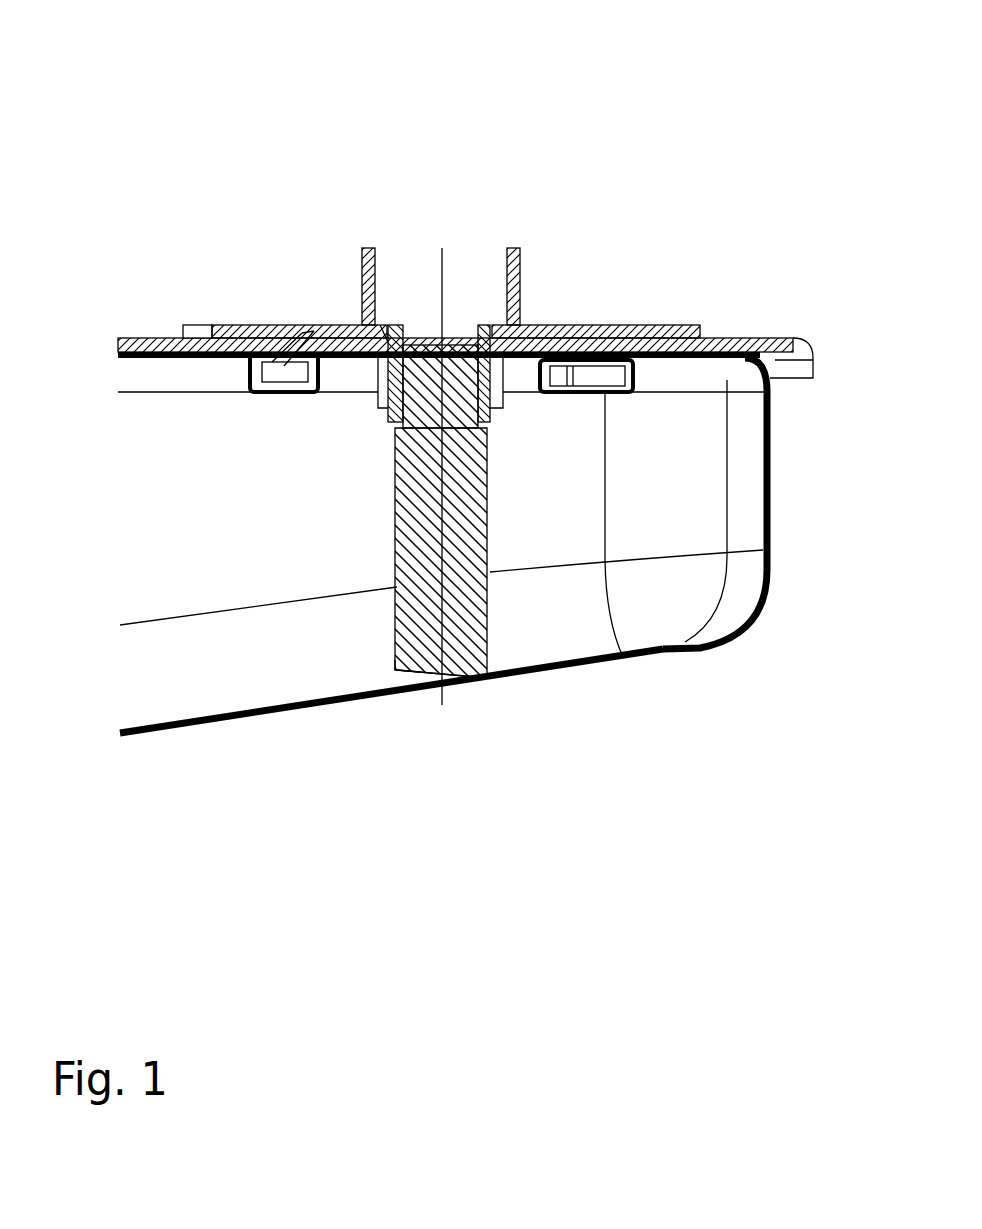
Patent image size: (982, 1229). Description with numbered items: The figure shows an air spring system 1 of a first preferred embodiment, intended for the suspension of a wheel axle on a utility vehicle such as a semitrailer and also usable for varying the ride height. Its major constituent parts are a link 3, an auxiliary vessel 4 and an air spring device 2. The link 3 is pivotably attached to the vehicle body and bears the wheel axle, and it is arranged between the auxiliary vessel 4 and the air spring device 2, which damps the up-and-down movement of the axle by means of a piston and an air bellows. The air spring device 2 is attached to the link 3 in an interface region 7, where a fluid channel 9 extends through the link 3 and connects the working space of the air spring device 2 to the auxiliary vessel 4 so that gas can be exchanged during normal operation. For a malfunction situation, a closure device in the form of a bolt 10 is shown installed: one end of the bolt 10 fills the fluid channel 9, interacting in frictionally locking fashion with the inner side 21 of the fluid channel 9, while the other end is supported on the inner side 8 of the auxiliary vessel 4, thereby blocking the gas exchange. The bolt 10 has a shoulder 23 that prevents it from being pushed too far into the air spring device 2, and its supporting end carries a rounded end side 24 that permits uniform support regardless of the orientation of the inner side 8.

The air spring system 1 is at (703, 147).
The air spring device 2 is at (520, 285).
The link 3 is at (763, 337).
The auxiliary vessel 4 is at (660, 630).
The interface region 7 is at (273, 302).
The inner side of the auxiliary vessel 8 is at (182, 685).
The fluid channel 9 is at (465, 346).
The bolt 10 is at (417, 688).
The inner side of the fluid channel 21 is at (410, 337).
The shoulder 23 is at (391, 427).
The rounded end side 24 is at (470, 685).